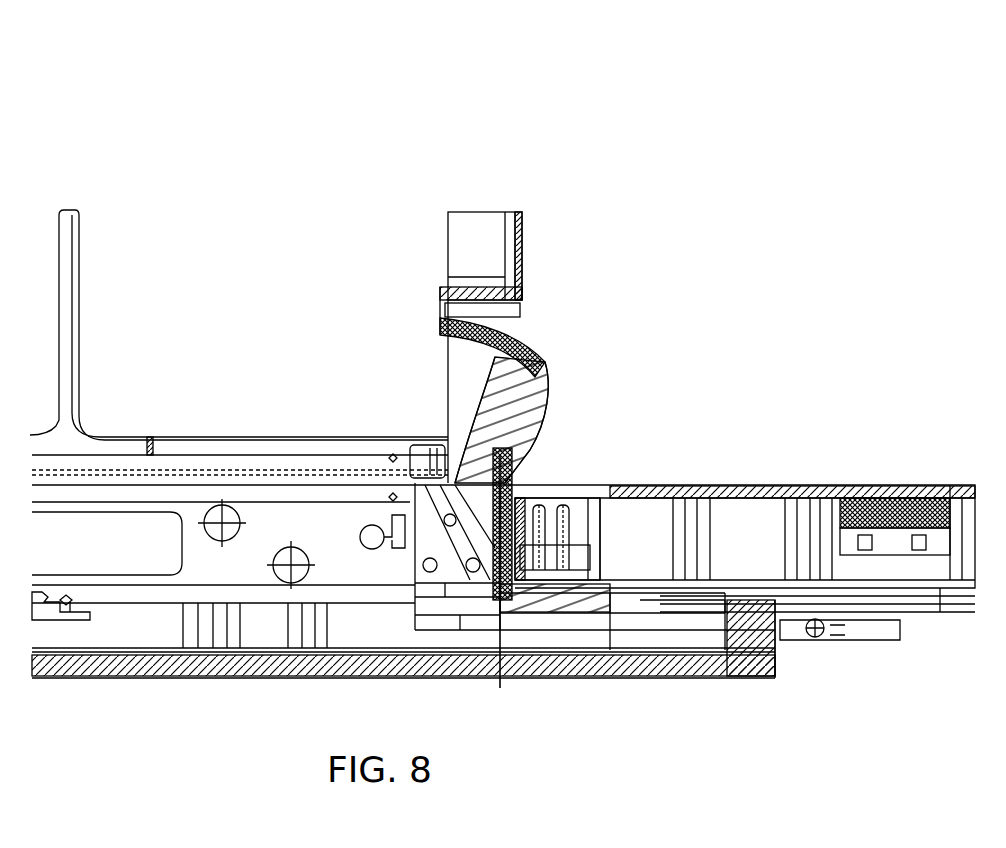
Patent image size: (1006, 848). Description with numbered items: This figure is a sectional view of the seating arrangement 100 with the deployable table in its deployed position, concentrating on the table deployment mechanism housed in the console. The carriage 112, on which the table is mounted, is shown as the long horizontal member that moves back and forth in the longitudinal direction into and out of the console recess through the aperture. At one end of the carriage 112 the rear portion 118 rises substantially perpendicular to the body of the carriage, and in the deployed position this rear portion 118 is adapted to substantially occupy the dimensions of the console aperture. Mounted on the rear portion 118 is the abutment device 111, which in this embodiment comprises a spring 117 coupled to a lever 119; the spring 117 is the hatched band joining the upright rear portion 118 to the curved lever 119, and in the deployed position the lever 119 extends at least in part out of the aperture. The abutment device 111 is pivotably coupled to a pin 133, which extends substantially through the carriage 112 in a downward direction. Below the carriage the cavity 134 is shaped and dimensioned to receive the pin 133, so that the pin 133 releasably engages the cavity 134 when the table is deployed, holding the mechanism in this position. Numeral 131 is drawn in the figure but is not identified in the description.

The seating arrangement 100 is at (530, 86).
The rear portion 118 is at (520, 242).
The spring 117 is at (440, 320).
The abutment device 111 is at (540, 380).
The lever 119 is at (525, 410).
The pin 133 is at (503, 497).
The cavity 134 is at (503, 690).
The carriage 112 is at (785, 485).
The bolt 131 is at (840, 631).